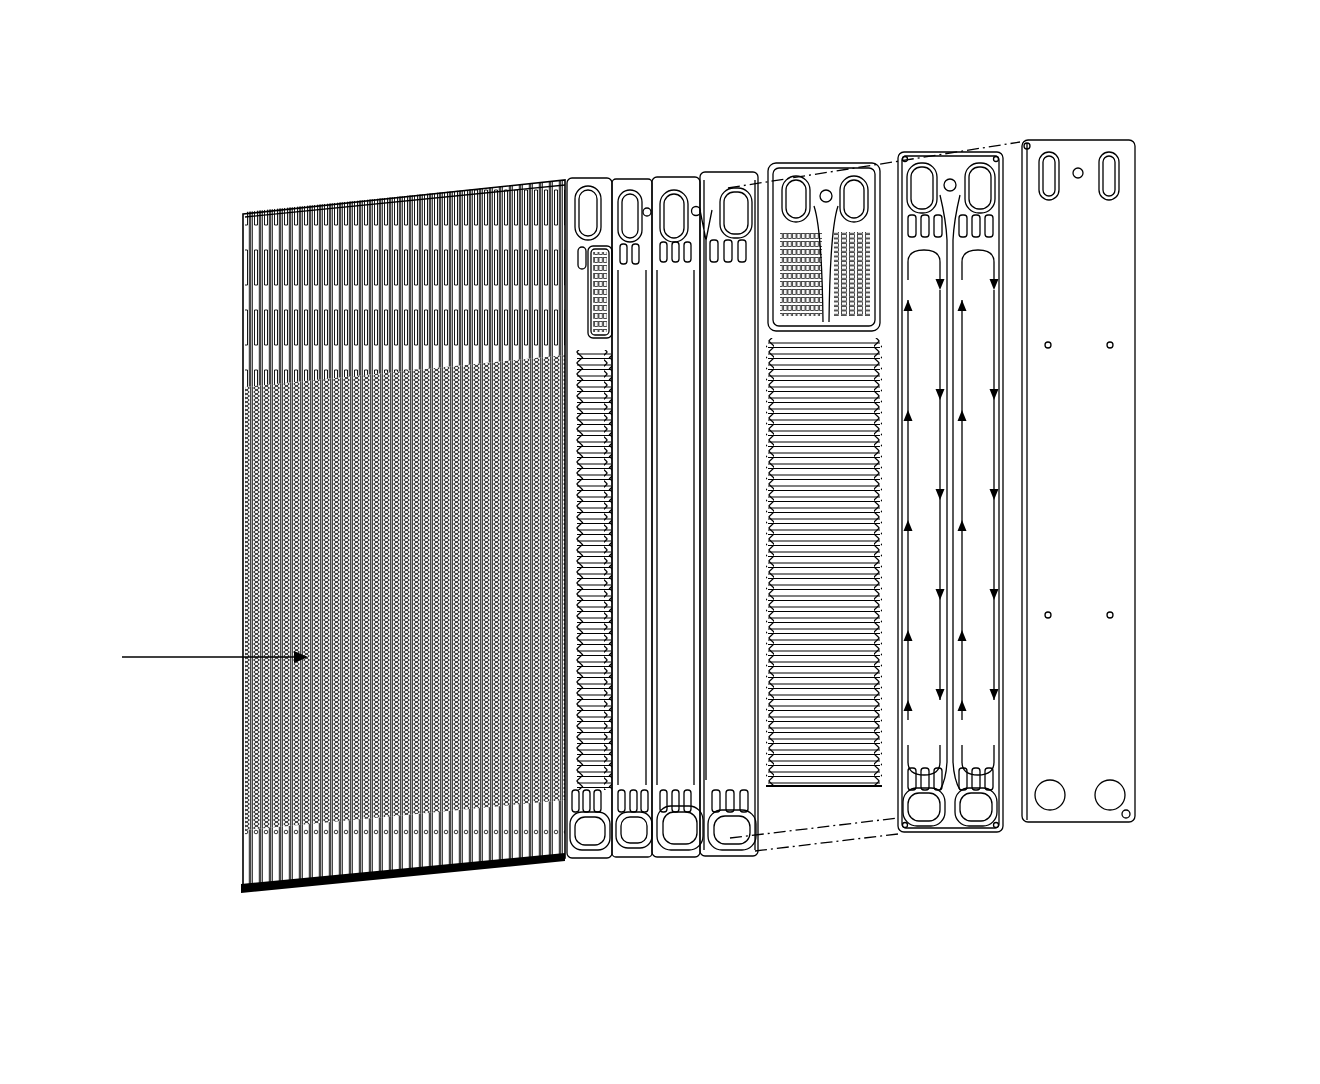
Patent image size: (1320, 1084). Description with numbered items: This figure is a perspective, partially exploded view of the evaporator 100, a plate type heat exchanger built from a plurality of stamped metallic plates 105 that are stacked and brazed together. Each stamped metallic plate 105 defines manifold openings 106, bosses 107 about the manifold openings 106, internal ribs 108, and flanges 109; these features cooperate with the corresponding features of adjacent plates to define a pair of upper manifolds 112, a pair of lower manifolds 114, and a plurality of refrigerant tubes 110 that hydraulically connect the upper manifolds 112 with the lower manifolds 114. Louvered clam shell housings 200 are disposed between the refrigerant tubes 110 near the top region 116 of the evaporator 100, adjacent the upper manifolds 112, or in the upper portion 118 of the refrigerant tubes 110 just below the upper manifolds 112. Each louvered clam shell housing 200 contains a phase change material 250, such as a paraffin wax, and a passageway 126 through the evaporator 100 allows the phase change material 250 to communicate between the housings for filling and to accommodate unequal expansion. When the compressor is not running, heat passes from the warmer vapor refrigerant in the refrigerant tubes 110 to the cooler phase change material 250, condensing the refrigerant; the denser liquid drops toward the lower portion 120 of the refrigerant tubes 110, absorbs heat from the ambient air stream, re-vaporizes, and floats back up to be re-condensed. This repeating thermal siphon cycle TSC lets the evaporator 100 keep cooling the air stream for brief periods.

The evaporator 100 is at (440, 181).
The stamped metallic plate 105 is at (664, 280).
The manifold opening 106 is at (928, 190).
The boss 107 is at (921, 165).
The internal rib 108 is at (1000, 832).
The flange 109 is at (952, 755).
The refrigerant tube 110 is at (275, 543).
The upper manifold 112 is at (586, 182).
The lower manifold 114 is at (605, 858).
The top region 116 is at (227, 214).
The upper portion 118 is at (1000, 342).
The lower portion 120 is at (1000, 766).
The passageway 126 is at (718, 188).
The louvered clam shell housing 200 is at (784, 205).
The phase change material 250 is at (837, 267).
The thermal siphon cycle TSC is at (977, 506).